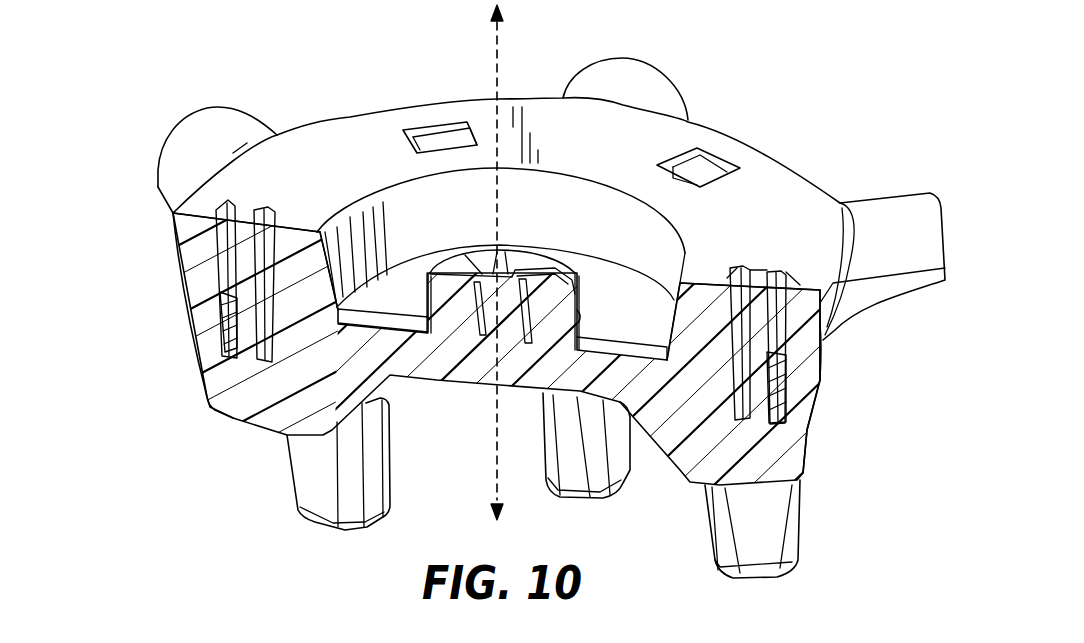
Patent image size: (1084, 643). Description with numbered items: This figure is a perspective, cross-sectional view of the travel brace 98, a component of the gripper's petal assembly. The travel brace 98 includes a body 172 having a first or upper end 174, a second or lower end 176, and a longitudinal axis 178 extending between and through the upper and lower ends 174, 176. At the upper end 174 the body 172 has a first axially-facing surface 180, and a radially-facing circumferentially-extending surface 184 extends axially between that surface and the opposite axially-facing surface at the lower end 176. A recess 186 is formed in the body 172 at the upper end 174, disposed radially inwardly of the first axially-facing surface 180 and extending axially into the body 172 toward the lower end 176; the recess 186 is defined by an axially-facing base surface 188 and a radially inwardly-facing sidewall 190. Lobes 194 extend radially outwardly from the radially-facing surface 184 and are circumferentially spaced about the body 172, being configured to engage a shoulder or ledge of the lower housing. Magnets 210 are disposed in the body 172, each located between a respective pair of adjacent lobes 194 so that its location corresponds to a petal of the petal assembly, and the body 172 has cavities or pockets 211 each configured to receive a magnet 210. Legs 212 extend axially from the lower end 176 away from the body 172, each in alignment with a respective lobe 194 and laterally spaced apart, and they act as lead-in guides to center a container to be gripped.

The travel brace 98 is at (822, 122).
The body 172 is at (343, 117).
The upper end 174 is at (142, 233).
The lower end 176 is at (182, 456).
The longitudinal axis 178 is at (499, 45).
The first axially-facing surface 180 is at (621, 162).
The radially-facing circumferentially-extending surface 184 is at (822, 323).
The recess 186 is at (449, 205).
The axially-facing base surface 188 is at (603, 337).
The radially inwardly-facing sidewall 190 is at (648, 220).
The lobes 194 is at (642, 85).
The magnets 210 is at (222, 308).
The cavities or pockets 211 is at (228, 213).
The legs 212 is at (296, 468).